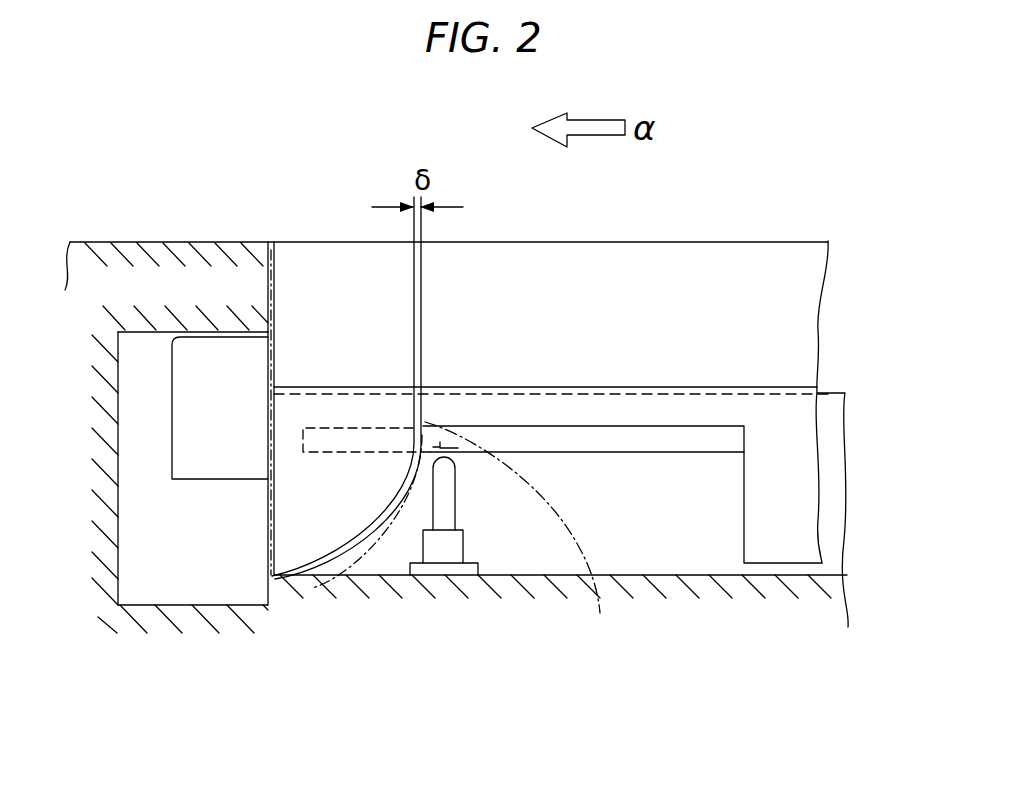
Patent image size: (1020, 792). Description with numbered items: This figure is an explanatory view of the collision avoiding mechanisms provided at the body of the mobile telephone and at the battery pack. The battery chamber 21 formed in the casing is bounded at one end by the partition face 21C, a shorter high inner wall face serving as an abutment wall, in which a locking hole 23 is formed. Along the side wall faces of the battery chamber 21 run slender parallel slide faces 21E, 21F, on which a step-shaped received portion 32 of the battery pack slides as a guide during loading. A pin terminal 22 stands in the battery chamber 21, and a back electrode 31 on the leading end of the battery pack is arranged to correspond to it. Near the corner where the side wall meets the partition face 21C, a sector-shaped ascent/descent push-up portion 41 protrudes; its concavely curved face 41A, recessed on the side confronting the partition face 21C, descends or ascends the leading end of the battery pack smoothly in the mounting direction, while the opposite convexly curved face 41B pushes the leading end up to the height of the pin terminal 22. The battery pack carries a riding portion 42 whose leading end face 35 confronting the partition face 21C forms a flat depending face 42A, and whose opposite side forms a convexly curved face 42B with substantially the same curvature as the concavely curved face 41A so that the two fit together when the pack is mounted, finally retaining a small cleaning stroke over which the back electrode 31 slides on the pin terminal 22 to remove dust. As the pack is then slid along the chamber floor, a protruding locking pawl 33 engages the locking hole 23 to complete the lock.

The battery chamber 21 is at (703, 573).
The partition face 21C is at (276, 312).
The slide face 21E is at (553, 283).
The slide face 21F is at (755, 390).
The pin terminal 22 is at (448, 490).
The locking hole 23 is at (120, 483).
The back electrode 31 is at (446, 442).
The received portion 32 is at (580, 392).
The locking pawl 33 is at (172, 390).
The leading end face 35 is at (270, 293).
The ascent/descent push-up portion 41 is at (466, 558).
The concavely curved face 41A is at (362, 525).
The convexly curved face 41B is at (572, 522).
The riding portion 42 is at (281, 488).
The depending face 42A is at (270, 545).
The convexly curved face 42B is at (352, 543).